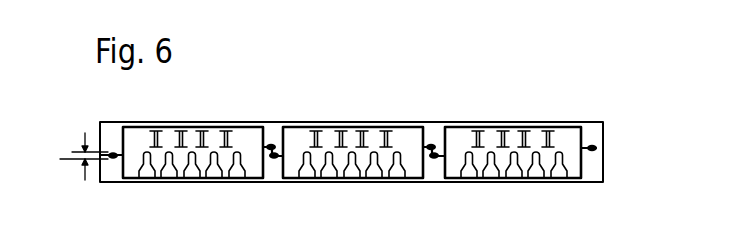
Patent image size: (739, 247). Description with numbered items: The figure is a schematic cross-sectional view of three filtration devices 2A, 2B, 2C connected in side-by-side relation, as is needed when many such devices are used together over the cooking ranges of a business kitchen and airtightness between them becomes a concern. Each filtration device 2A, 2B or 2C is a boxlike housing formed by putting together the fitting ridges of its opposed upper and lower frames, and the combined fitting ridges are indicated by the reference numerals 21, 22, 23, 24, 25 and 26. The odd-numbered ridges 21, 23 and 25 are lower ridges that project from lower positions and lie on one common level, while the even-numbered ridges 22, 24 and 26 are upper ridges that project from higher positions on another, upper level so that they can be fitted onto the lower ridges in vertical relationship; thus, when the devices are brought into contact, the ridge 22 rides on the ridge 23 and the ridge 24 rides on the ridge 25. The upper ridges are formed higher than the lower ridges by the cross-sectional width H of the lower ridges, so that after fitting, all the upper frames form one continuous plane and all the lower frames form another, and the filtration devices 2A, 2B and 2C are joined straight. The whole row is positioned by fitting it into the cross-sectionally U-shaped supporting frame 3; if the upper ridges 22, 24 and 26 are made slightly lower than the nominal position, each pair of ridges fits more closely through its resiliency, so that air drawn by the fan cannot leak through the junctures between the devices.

The filtration device 2A is at (194, 128).
The filtration device 2B is at (350, 133).
The filtration device 2C is at (512, 133).
The supporting frame 3 is at (606, 167).
The fitting ridge (lower ridge) 21 is at (113, 160).
The fitting ridge (upper ridge) 22 is at (272, 144).
The fitting ridge (lower ridge) 23 is at (274, 160).
The fitting ridge (upper ridge) 24 is at (431, 144).
The fitting ridge (lower ridge) 25 is at (434, 160).
The fitting ridge (upper ridge) 26 is at (592, 145).
The cross-sectional width of the lower ridges H is at (72, 158).